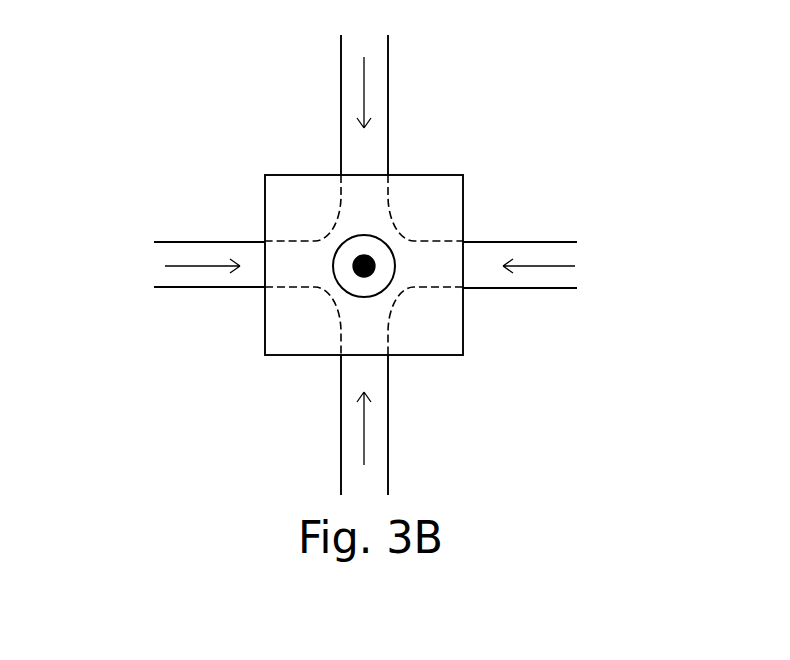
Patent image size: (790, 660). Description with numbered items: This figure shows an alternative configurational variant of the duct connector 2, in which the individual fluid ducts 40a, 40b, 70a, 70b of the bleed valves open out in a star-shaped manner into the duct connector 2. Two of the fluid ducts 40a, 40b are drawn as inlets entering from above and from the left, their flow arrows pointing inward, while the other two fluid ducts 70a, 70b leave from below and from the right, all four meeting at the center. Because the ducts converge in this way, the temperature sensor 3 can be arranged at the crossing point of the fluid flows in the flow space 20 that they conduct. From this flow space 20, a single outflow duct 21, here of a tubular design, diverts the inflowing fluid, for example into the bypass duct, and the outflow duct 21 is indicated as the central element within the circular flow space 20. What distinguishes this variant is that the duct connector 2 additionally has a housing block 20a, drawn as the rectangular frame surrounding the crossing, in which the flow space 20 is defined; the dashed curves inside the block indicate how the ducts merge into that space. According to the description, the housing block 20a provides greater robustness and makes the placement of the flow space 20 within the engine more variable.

The duct connector 2 is at (260, 148).
The temperature sensor 3 is at (350, 288).
The flow space 20 is at (367, 248).
The chamber housing 20a is at (428, 185).
The outflow duct 21 is at (396, 266).
The fluid duct 40a is at (357, 112).
The fluid duct 40b is at (224, 238).
The fluid duct 70a is at (375, 407).
The fluid duct 70b is at (493, 239).